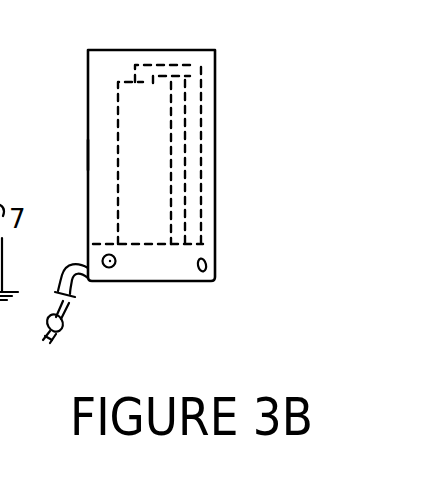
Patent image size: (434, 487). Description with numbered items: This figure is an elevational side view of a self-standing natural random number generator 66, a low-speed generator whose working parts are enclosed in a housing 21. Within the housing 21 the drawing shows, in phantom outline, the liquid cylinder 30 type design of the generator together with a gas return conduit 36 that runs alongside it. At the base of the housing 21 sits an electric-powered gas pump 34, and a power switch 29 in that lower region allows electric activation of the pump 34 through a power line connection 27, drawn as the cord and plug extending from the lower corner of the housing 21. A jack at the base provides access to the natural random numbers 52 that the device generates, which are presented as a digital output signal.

The housing 21 is at (100, 63).
The liquid cylinder 30 is at (135, 118).
The gas return conduit 36 is at (198, 118).
The natural random number generator 66 is at (104, 152).
The electric-powered gas pump 34 is at (160, 268).
The power switch 29 is at (215, 255).
The natural random numbers 52 is at (111, 267).
The power line connection 27 is at (60, 333).